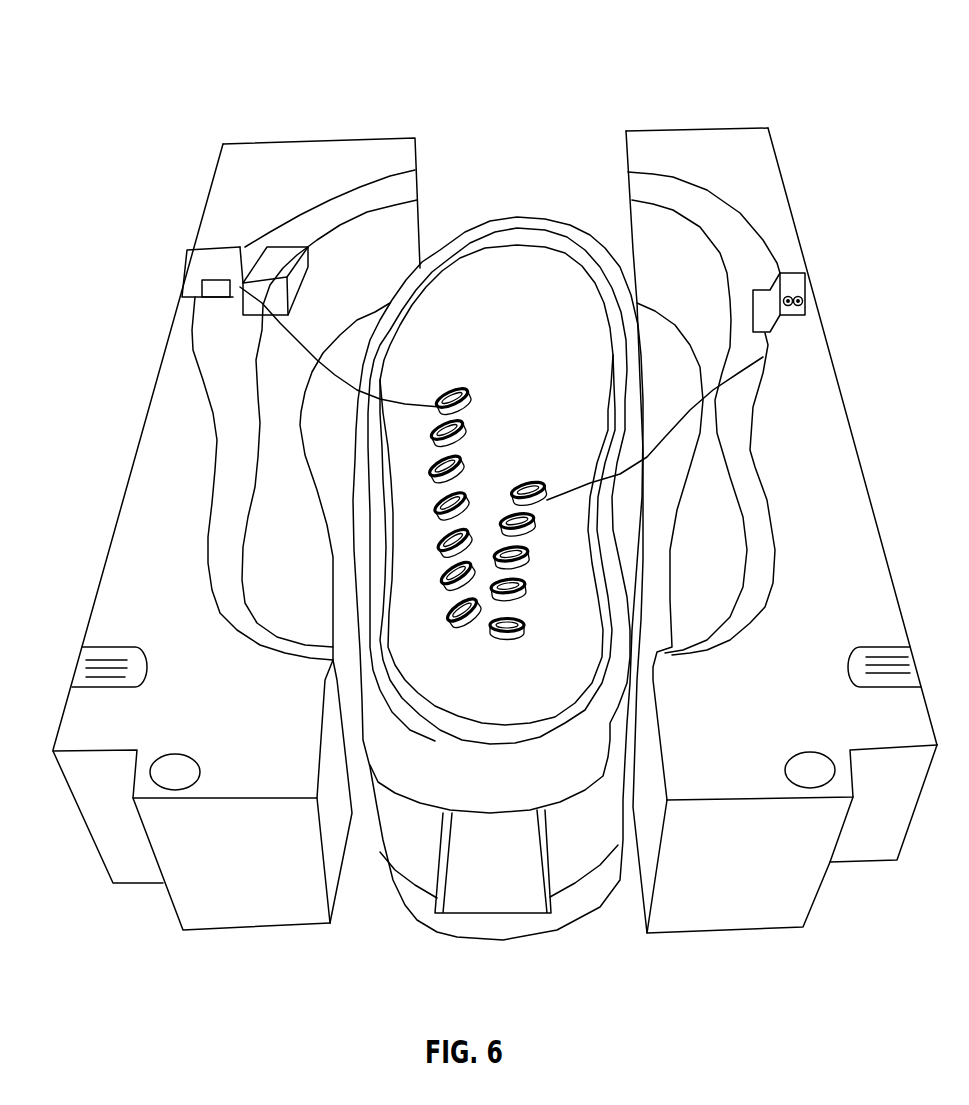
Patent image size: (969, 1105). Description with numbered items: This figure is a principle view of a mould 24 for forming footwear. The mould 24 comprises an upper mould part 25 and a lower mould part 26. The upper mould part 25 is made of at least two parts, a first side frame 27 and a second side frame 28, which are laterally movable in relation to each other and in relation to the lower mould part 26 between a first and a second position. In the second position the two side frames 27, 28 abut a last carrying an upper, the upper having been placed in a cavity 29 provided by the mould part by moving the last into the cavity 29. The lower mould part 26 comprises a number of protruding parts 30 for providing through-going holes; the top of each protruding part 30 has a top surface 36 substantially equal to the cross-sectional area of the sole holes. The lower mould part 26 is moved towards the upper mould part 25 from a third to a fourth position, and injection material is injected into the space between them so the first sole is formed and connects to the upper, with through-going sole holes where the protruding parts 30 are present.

The mould 24 is at (180, 32).
The upper mould part 25 is at (392, 148).
The lower mould part 26 is at (496, 599).
The first side frame 27 is at (78, 730).
The second side frame 28 is at (781, 559).
The cavity 29 is at (440, 509).
The protruding parts 30 is at (491, 365).
The top surface 36 is at (495, 403).